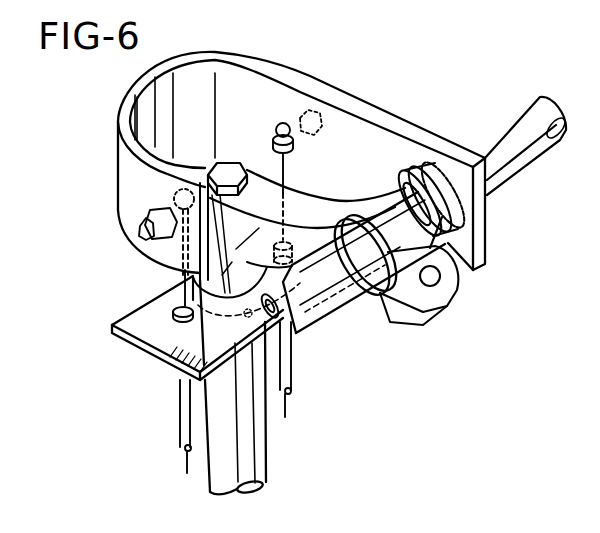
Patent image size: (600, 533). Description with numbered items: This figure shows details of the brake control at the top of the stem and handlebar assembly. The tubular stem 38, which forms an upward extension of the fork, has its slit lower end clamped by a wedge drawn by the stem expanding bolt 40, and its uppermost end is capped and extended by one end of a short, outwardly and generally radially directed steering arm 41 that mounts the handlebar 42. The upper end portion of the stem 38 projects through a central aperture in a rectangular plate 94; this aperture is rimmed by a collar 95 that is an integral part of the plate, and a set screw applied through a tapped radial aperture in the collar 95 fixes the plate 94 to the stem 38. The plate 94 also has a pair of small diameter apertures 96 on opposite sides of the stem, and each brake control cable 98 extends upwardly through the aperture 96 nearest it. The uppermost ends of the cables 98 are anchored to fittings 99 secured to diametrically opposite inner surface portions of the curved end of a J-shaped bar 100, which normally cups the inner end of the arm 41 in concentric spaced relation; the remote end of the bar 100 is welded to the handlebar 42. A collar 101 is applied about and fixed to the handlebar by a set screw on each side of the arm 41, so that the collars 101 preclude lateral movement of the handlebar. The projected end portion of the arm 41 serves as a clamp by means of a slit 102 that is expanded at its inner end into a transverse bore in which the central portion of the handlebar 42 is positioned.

The tubular stem 38 is at (253, 450).
The stem expanding bolt 40 is at (224, 170).
The steering arm 41 is at (318, 206).
The handlebar 42 is at (523, 110).
The rectangular plate 94 is at (163, 341).
The collar 95 is at (236, 283).
The small diameter apertures 96 is at (181, 325).
The control cable 98 is at (281, 153).
The fittings 99 is at (277, 128).
The J-shaped bar 100 is at (378, 108).
The collar 101 is at (370, 290).
The slit 102 is at (410, 318).